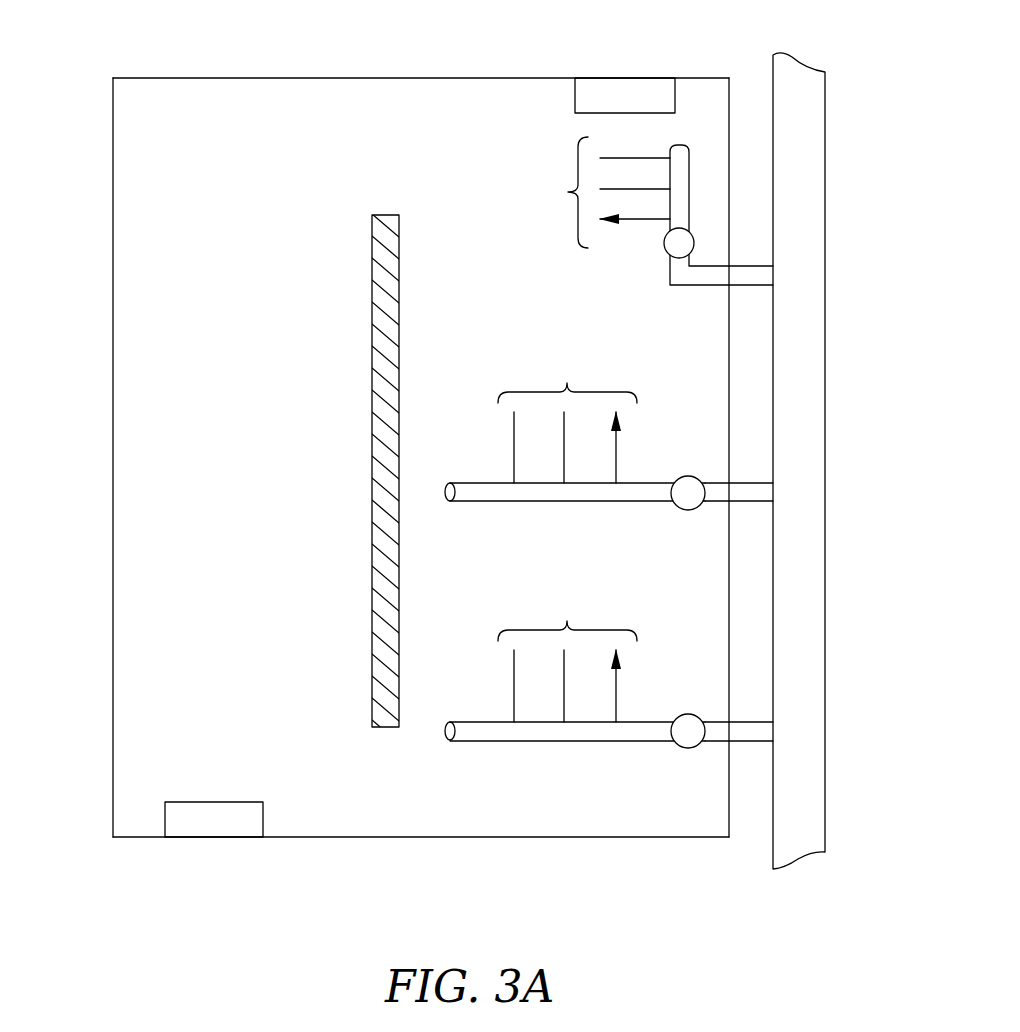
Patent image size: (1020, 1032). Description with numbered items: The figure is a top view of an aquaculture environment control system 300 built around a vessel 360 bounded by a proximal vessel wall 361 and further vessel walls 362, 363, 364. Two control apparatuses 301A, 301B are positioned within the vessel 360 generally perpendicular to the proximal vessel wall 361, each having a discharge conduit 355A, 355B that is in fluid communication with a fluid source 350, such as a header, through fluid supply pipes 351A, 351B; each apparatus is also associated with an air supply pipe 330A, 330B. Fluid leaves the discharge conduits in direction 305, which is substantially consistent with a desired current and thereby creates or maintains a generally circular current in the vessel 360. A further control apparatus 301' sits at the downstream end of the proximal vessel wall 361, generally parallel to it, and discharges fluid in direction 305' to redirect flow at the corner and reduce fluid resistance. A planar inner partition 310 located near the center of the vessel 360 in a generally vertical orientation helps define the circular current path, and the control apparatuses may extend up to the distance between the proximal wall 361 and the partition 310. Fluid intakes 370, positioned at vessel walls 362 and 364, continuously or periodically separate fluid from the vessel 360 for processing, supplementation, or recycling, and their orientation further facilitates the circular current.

The aquaculture environment control system 300 is at (832, 65).
The control apparatus 301' is at (638, 227).
The control apparatus 301A is at (674, 442).
The control apparatus 301B is at (678, 679).
The direction 305 is at (567, 539).
The direction 305' is at (574, 192).
The inner partition 310 is at (372, 532).
The air supply pipe 330A is at (690, 510).
The air supply pipe 330B is at (688, 750).
The fluid source 350 is at (763, 262).
The fluid supply pipe 351A is at (717, 480).
The fluid supply pipe 351B is at (734, 698).
The discharge conduit 355A is at (500, 510).
The discharge conduit 355B is at (490, 745).
The vessel 360 is at (90, 483).
The proximal vessel wall 361 is at (731, 830).
The vessel wall 362 is at (344, 78).
The vessel wall 363 is at (113, 605).
The vessel wall 364 is at (395, 838).
The fluid intake 370 is at (623, 88).